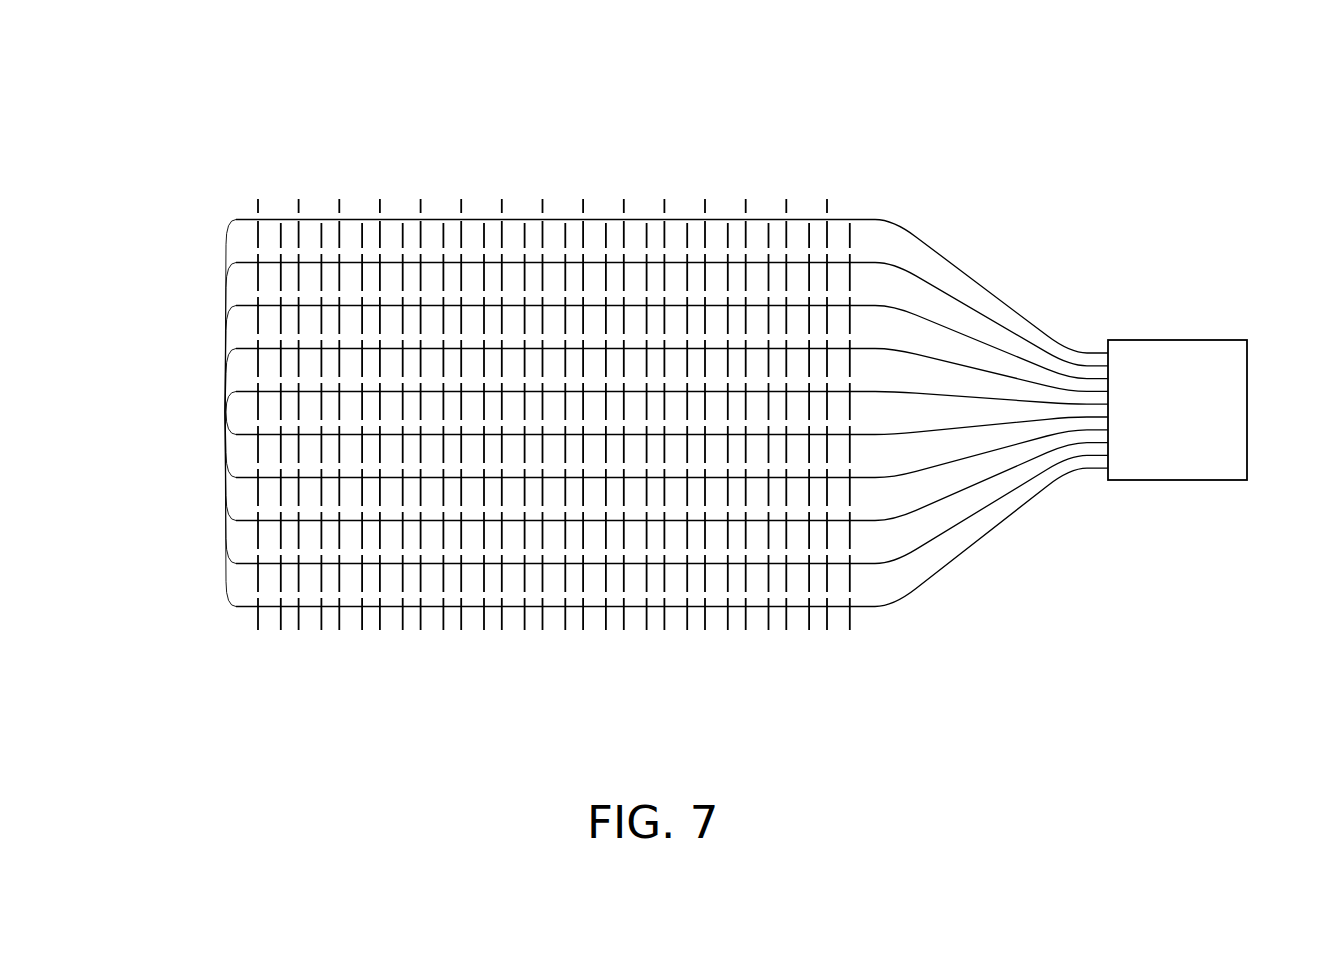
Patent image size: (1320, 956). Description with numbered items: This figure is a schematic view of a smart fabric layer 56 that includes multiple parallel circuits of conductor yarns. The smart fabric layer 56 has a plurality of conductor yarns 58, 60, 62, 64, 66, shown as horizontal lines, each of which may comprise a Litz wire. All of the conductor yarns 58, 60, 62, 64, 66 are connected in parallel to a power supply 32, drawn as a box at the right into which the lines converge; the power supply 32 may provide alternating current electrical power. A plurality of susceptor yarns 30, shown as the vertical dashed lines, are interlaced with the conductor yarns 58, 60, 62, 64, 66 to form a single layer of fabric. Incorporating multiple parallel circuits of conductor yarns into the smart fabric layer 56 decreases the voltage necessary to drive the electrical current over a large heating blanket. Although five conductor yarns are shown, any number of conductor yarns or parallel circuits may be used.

The susceptor yarns 30 is at (300, 207).
The power supply 32 is at (1165, 449).
The smart fabric layer 56 is at (1016, 121).
The conductor yarn 58 is at (233, 220).
The conductor yarn 60 is at (233, 262).
The conductor yarn 62 is at (233, 306).
The conductor yarn 64 is at (233, 348).
The conductor yarn 66 is at (233, 392).